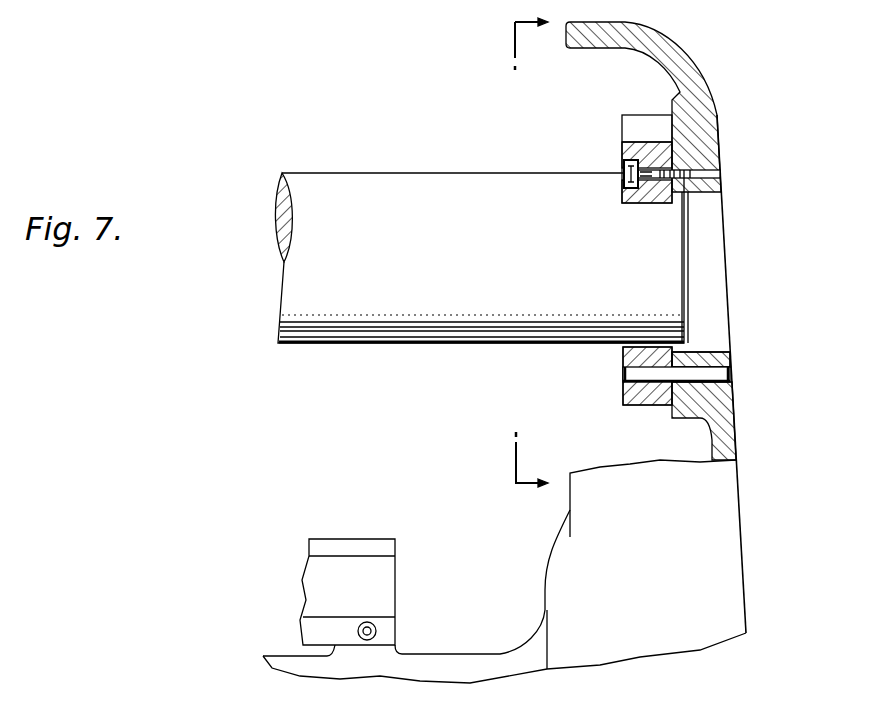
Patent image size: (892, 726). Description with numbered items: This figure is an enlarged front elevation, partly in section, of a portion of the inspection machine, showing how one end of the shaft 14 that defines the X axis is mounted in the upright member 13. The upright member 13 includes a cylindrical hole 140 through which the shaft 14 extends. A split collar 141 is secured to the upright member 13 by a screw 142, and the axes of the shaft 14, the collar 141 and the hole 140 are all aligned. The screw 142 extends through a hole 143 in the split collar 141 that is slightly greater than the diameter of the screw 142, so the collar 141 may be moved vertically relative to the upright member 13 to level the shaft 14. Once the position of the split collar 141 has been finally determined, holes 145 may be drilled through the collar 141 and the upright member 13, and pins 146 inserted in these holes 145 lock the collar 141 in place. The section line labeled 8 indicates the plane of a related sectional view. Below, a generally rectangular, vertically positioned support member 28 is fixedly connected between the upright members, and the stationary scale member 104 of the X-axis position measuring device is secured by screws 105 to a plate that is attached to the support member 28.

The section line 8- 8 is at (512, 260).
The upright member 13 is at (732, 545).
The shaft 14 is at (481, 258).
The support member 28 is at (480, 672).
The stationary scale member 104 is at (388, 578).
The screws 105 is at (378, 631).
The cylindrical hole 140 is at (708, 352).
The split collar 141 is at (632, 108).
The screw 142 is at (623, 181).
The hole 143 is at (627, 168).
The holes 145 is at (728, 372).
The pins 146 is at (625, 370).